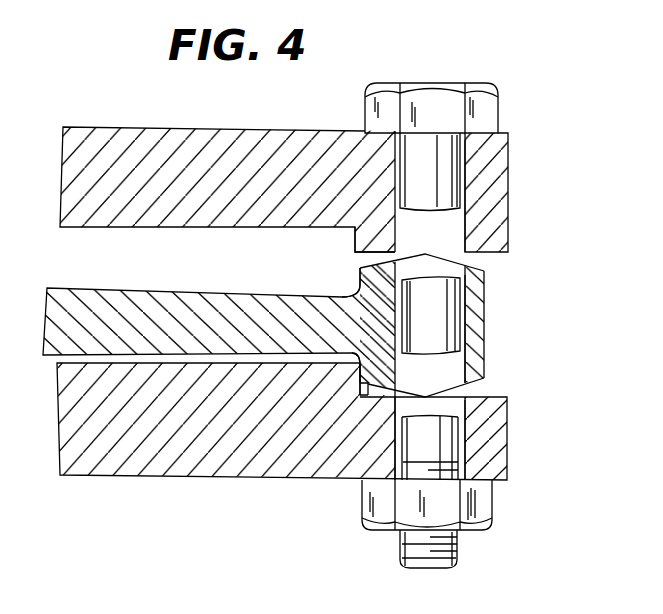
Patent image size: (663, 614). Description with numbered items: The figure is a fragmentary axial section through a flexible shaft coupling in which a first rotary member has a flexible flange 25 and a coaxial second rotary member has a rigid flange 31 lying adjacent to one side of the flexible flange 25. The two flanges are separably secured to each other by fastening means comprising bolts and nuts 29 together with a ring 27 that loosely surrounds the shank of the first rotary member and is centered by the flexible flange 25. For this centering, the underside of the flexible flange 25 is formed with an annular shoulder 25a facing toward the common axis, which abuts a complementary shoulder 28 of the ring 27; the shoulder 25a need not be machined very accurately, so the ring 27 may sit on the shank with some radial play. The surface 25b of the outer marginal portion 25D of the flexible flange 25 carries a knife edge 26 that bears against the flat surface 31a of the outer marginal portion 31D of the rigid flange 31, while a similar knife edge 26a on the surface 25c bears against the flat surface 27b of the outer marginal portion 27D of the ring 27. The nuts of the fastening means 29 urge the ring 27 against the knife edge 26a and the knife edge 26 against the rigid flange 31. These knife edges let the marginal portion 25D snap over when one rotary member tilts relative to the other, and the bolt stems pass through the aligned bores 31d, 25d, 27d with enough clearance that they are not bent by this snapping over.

The rigid flange 31 is at (127, 126).
The outer marginal portion of the rigid flange 31D is at (500, 192).
The bore 31d is at (470, 152).
The flat surface 31a is at (378, 240).
The knife edge 26 is at (451, 236).
The flexible flange 25 is at (138, 287).
The outer marginal portion of the flexible flange 25D is at (481, 338).
The bore 25d is at (481, 292).
The surface 25b is at (362, 264).
The annular shoulder 25a is at (359, 380).
The surface 25c is at (366, 396).
The knife edge 26a is at (436, 383).
The complementary shoulder 28 is at (362, 368).
The ring 27 is at (118, 477).
The outer marginal portion of the ring 27D is at (497, 448).
The bore 27d is at (500, 412).
The flat surface 27b is at (393, 400).
The bolts and nuts 29 is at (393, 549).